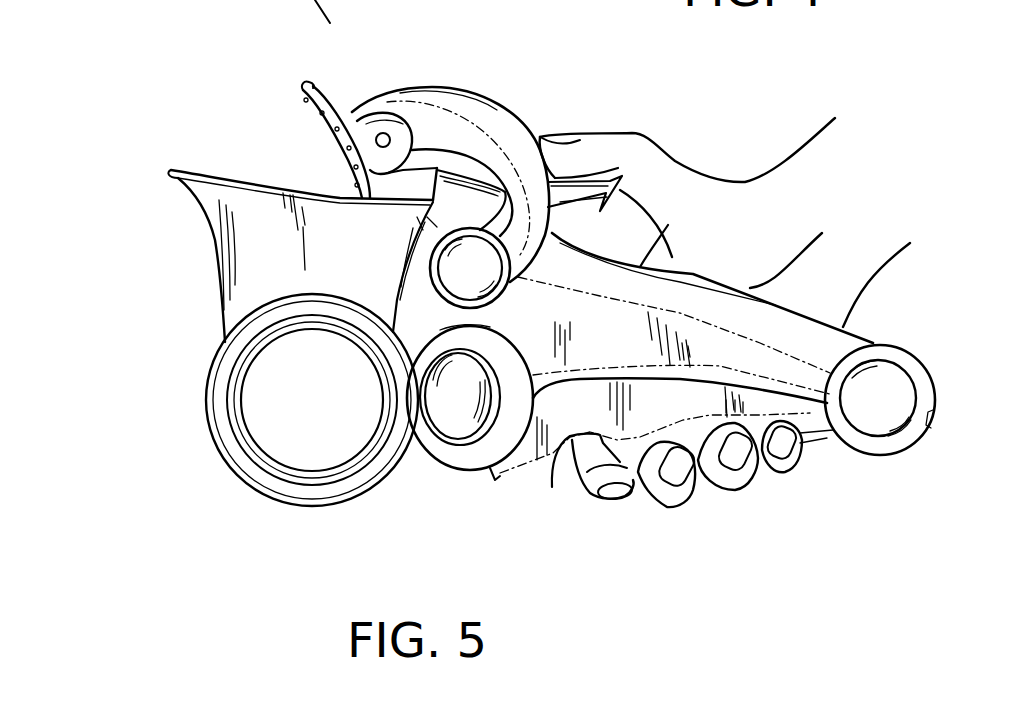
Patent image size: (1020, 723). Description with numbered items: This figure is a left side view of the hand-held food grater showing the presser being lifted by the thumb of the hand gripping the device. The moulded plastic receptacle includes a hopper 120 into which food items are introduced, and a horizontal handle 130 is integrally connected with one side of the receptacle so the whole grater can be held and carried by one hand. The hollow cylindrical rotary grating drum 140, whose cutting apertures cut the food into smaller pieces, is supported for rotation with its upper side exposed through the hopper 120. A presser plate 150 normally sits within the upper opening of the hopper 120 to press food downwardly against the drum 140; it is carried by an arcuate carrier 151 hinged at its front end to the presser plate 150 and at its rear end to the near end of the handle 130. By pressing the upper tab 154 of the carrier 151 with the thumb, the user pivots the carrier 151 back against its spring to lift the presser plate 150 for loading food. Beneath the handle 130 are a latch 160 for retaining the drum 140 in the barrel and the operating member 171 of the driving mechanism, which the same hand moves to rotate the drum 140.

The hopper 120 is at (247, 245).
The handle 130 is at (790, 327).
The rotary grating drum 140 is at (225, 417).
The presser plate 150 is at (334, 97).
The arcuate carrier 151 is at (467, 120).
The upper tab 154 is at (620, 190).
The latch 160 is at (450, 455).
The operating member 171 is at (813, 427).